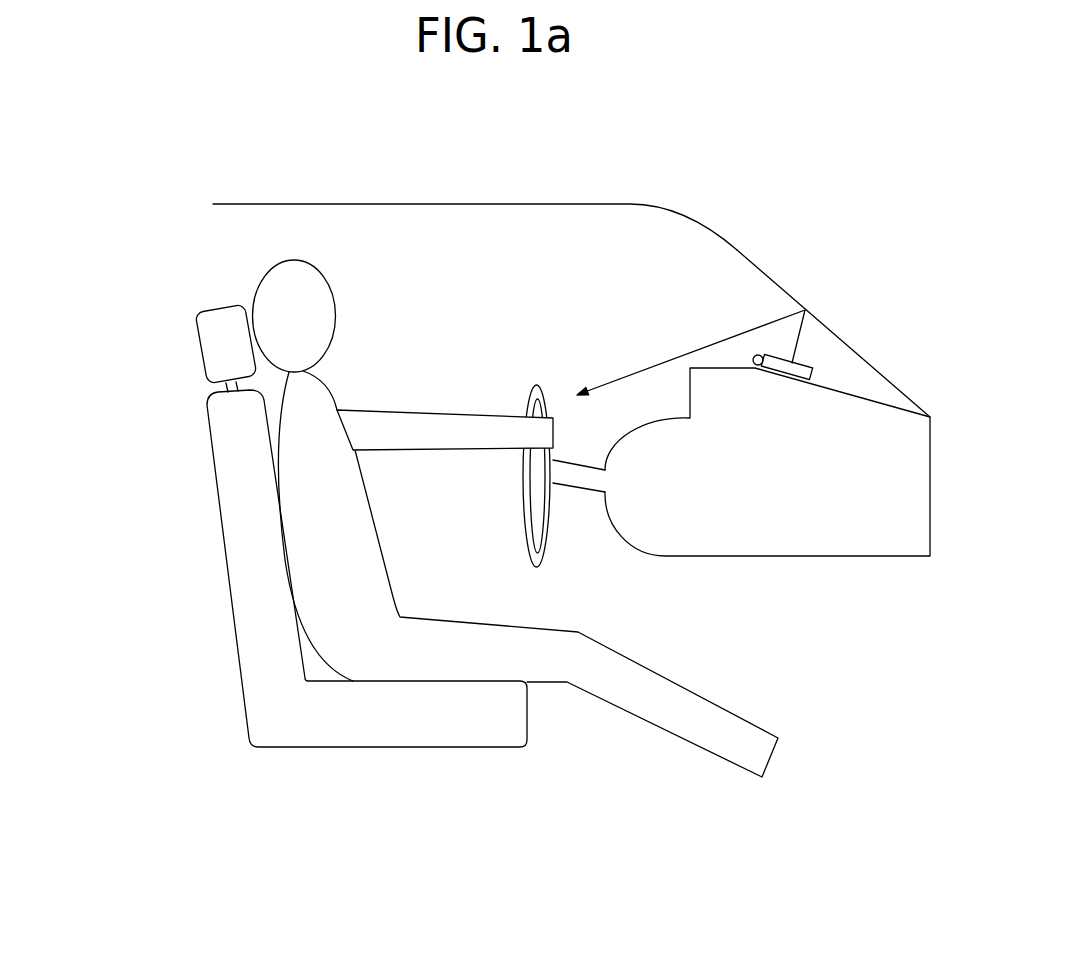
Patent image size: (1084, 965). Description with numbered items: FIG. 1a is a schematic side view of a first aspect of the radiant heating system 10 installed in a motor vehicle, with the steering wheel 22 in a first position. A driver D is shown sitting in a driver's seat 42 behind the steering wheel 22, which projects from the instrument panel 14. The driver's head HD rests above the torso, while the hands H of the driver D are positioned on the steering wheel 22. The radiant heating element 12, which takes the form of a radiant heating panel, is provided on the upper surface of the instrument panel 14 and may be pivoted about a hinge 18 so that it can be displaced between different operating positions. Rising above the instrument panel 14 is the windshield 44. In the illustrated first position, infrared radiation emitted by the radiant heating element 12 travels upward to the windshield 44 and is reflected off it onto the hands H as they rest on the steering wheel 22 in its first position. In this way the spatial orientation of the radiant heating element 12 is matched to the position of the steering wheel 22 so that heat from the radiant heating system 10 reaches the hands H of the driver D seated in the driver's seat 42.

The radiant heating system 10 is at (843, 224).
The radiant heating element 12 is at (807, 361).
The instrument panel 14 is at (757, 530).
The hinge 18 is at (754, 355).
The steering wheel 22 is at (527, 535).
The driver's seat 42 is at (155, 442).
The windshield 44 is at (783, 283).
The head of driver HD is at (323, 298).
The driver D is at (516, 505).
The hands H is at (545, 432).